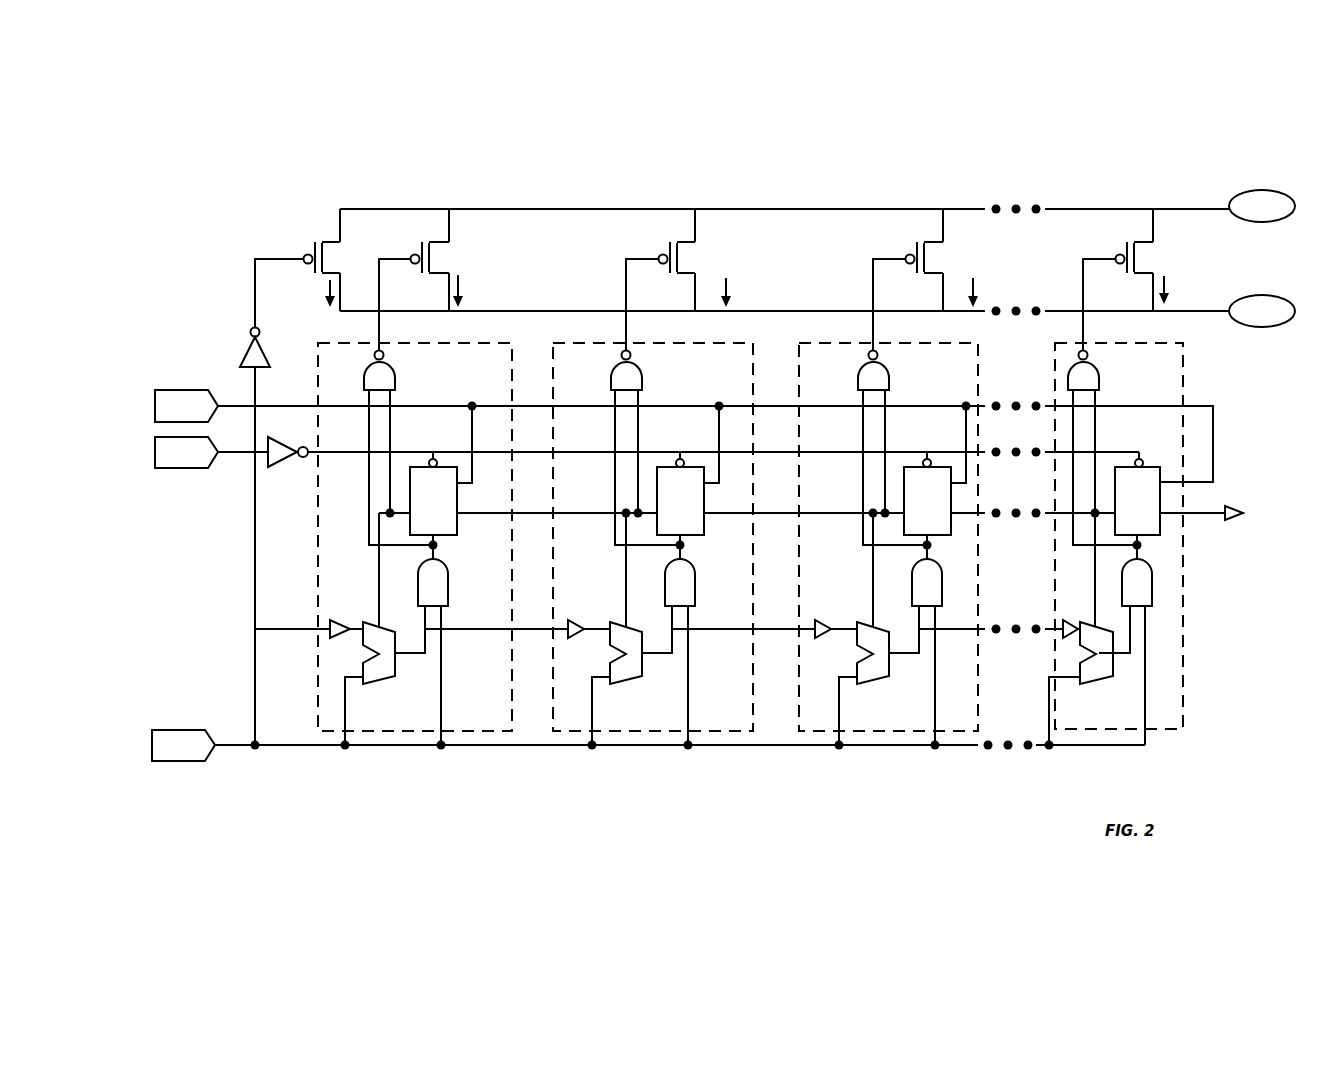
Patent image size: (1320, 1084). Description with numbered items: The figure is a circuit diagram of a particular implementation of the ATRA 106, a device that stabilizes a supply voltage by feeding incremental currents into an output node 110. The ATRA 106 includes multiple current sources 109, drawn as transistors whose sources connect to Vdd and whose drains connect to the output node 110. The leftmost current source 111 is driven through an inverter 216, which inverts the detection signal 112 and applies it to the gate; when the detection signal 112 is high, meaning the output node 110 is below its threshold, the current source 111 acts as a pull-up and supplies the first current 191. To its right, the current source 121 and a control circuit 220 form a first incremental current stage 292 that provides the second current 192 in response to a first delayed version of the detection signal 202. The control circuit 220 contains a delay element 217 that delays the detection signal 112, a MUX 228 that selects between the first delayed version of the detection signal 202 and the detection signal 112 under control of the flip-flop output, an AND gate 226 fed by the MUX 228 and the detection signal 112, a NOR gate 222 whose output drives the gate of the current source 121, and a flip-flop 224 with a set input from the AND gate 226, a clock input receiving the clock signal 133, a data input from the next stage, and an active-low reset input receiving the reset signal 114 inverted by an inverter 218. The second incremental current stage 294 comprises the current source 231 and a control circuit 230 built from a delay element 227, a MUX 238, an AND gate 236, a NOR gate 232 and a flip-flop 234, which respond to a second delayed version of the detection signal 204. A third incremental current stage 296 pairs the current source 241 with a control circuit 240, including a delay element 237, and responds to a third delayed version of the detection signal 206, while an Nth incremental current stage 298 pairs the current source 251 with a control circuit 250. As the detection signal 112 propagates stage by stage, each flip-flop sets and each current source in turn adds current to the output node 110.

The ATRA 106 is at (230, 136).
The current sources 109 is at (286, 234).
The output node 110 is at (1205, 313).
The current source 111 is at (326, 258).
The detection signal 112 is at (235, 760).
The reset signal 114 is at (237, 456).
The current source 121 is at (434, 258).
The clock signal 133 is at (235, 405).
The first current 191 is at (327, 283).
The second current 192 is at (468, 284).
The first delayed version of the detection signal 202 is at (353, 633).
The second delayed version of the detection signal 204 is at (600, 633).
The third delayed version of the detection signal 206 is at (847, 633).
The inverter 216 is at (270, 350).
The delay element 217 is at (338, 618).
The inverter 218 is at (284, 470).
The control circuit 220 is at (413, 347).
The NOR gate 222 is at (396, 375).
The flip-flop 224 is at (458, 495).
The AND gate 226 is at (448, 572).
The delay element 227 is at (579, 618).
The MUX 228 is at (386, 688).
The control circuit 230 is at (658, 347).
The current source 231 is at (682, 258).
The NOR gate 232 is at (643, 375).
The flip-flop 234 is at (705, 495).
The AND gate 236 is at (695, 572).
The delay element 237 is at (826, 618).
The MUX 238 is at (633, 688).
The control circuit 240 is at (905, 347).
The current source 241 is at (929, 258).
The control circuit 250 is at (1115, 347).
The current source 251 is at (1139, 258).
The first incremental current stage 292 is at (396, 162).
The second incremental current stage 294 is at (643, 162).
The third incremental current stage 296 is at (890, 162).
The Nth incremental current stage 298 is at (1105, 162).